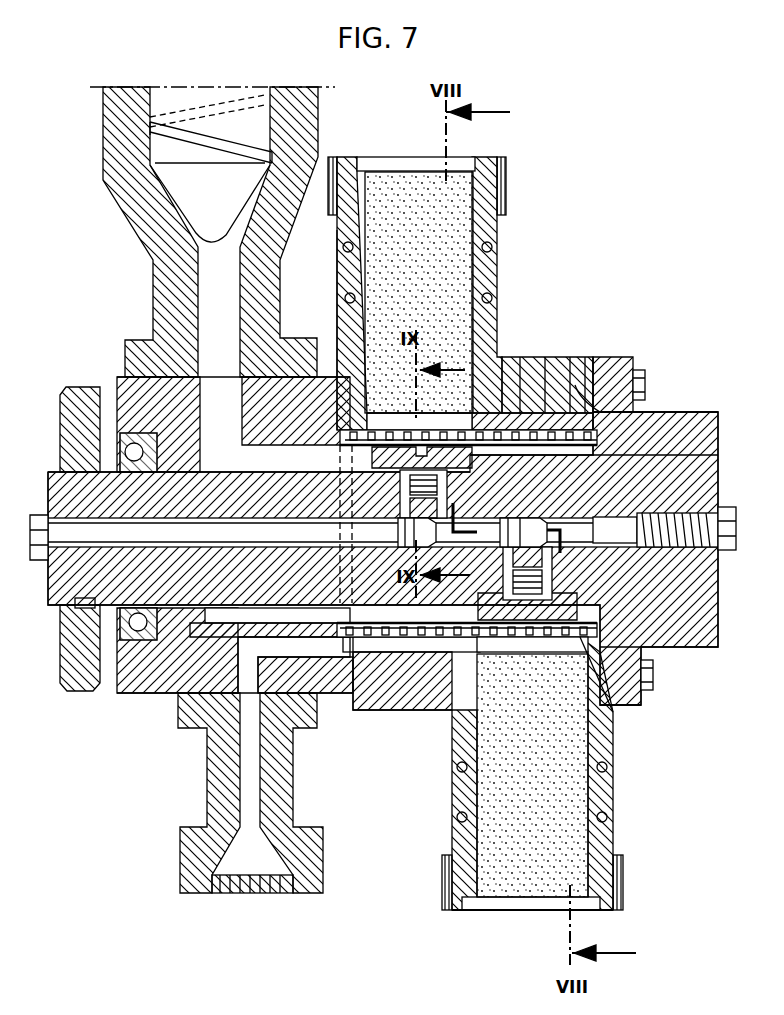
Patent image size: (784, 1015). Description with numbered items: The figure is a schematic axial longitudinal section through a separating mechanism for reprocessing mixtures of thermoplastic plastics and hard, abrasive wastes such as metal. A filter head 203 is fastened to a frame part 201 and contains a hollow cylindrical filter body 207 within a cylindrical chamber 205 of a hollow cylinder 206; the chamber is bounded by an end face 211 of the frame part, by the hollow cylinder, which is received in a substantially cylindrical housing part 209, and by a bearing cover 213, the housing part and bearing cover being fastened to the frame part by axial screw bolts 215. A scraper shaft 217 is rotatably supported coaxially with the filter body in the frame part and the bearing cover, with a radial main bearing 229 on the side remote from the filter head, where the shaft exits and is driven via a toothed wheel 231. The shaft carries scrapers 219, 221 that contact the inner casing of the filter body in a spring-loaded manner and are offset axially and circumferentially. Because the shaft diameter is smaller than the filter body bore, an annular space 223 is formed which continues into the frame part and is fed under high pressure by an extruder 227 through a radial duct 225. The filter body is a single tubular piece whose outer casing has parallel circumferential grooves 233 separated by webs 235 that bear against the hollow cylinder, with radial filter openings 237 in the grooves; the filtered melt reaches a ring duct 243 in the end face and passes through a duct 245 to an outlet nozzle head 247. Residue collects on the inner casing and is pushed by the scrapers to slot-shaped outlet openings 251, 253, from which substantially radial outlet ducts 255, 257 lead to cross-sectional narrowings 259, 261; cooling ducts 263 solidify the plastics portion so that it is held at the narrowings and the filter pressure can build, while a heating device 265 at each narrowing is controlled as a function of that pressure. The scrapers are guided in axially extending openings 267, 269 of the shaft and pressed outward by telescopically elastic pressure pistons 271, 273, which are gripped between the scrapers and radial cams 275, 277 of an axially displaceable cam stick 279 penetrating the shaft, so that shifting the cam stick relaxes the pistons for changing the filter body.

The frame part 201 is at (157, 695).
The filter head 203 is at (595, 300).
The cylindrical chamber 205 is at (540, 357).
The hollow cylinder 206 is at (582, 357).
The filter body 207 is at (594, 345).
The housing part 209 is at (563, 357).
The end face 211 is at (340, 690).
The bearing cover 213 is at (682, 648).
The axial screw bolts 215 is at (645, 380).
The scraper shaft 217 is at (712, 478).
The scraper 219 is at (352, 385).
The scraper 221 is at (612, 700).
The annular space 223 is at (597, 448).
The duct 225 is at (213, 410).
The extruder 227 is at (265, 113).
The radial main bearing 229 is at (145, 693).
The toothed wheel 231 is at (62, 660).
The circumferential grooves 233 is at (490, 430).
The circumferential webs 235 is at (518, 357).
The radial filter openings 237 is at (610, 416).
The ring duct 243 is at (336, 430).
The duct 245 is at (318, 695).
The outlet nozzle head 247 is at (212, 795).
The outlet opening 251 is at (372, 412).
The outlet opening 253 is at (515, 662).
The outlet duct 255 is at (475, 232).
The outlet duct 257 is at (470, 822).
The cross-sectional narrowing 259 is at (466, 160).
The cross-sectional narrowing 261 is at (478, 908).
The cooling ducts 263 is at (343, 248).
The heating device 265 is at (506, 185).
The axially extending opening 267 is at (385, 478).
The axially extending opening 269 is at (590, 628).
The pressure piston 271 is at (448, 497).
The pressure piston 273 is at (555, 567).
The radial cam 275 is at (395, 545).
The radial cam 277 is at (528, 518).
The cam stick 279 is at (636, 520).